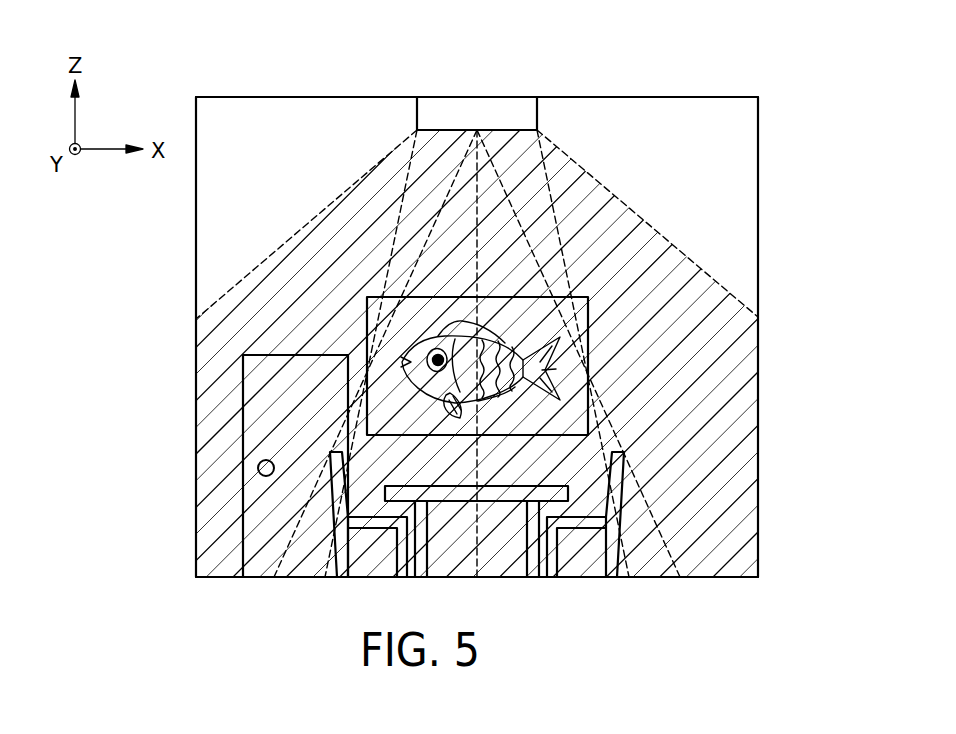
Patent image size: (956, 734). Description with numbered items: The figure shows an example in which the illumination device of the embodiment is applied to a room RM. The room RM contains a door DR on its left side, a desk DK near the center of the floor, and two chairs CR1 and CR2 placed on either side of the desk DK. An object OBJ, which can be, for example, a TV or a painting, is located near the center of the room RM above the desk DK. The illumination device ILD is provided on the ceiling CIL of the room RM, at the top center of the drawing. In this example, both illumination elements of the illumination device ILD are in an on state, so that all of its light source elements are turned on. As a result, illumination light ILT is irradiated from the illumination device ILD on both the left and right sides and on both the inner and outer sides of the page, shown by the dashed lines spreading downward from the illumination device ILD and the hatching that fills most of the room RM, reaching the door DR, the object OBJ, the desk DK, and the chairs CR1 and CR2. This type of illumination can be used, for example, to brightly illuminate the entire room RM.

The room RM is at (746, 64).
The ceiling CIL is at (635, 98).
The illumination device ILD is at (487, 106).
The illumination light ILT is at (306, 232).
The door DR is at (294, 354).
The object OBJ is at (589, 317).
The chair CR1 is at (373, 514).
The chair CR2 is at (584, 514).
The desk DK is at (507, 484).